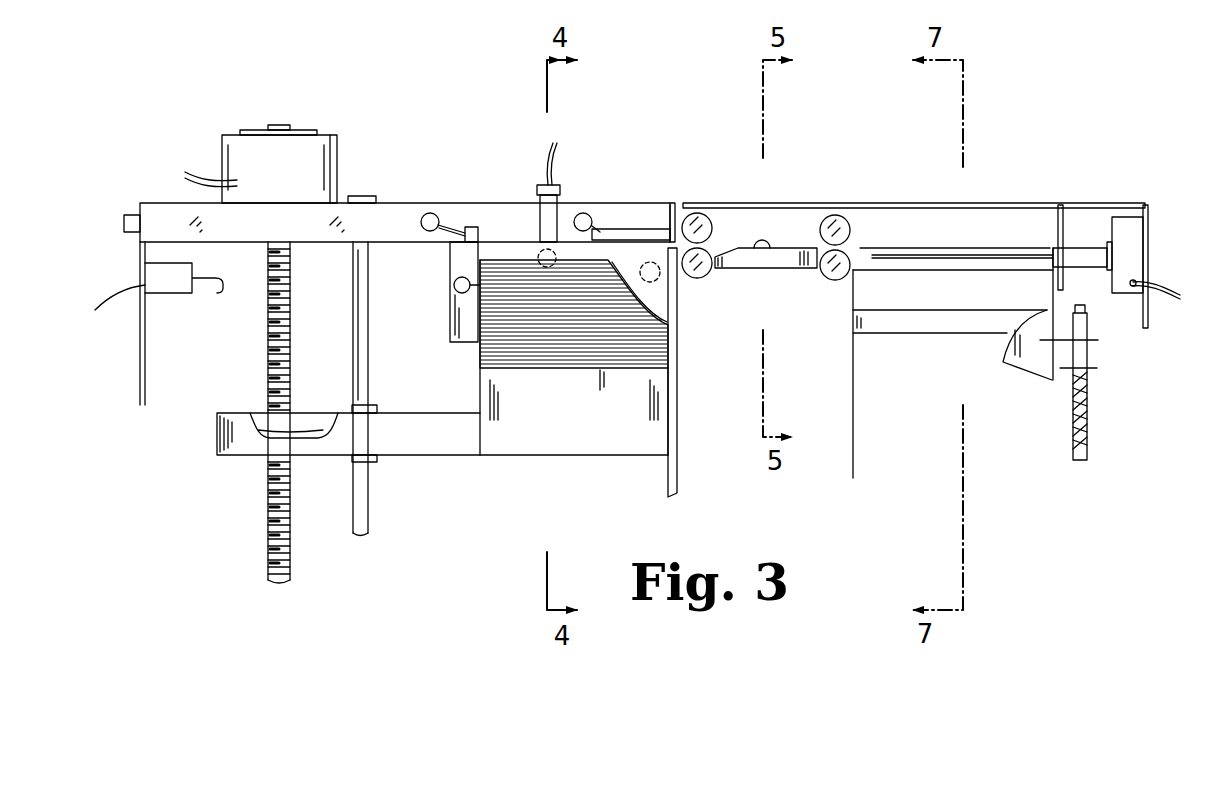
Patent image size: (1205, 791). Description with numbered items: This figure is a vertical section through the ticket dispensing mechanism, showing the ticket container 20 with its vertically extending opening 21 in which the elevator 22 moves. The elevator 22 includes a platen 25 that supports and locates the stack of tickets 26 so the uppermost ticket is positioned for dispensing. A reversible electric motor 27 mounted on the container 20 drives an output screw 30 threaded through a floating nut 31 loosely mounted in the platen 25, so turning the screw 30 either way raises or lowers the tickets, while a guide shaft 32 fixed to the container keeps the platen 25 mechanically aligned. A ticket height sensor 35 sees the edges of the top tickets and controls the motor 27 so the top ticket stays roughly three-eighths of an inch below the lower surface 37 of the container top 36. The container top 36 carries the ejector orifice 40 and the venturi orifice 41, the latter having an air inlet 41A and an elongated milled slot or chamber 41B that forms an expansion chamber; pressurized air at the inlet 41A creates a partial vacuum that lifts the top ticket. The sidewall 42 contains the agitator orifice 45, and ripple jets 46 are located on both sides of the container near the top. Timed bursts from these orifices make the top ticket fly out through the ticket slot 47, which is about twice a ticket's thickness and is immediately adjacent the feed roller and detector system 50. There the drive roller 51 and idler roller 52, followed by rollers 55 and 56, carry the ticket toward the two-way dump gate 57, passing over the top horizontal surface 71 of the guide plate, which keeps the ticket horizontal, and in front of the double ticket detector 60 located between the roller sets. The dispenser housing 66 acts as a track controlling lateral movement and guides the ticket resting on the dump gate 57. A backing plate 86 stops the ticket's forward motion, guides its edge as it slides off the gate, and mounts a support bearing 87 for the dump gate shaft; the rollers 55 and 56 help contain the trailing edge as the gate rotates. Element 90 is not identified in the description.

The ticket container 20 is at (678, 475).
The vertically extending opening 21 is at (658, 292).
The elevator 22 is at (545, 456).
The platen 25 is at (582, 441).
The stack of tickets 26 is at (545, 353).
The reversible electric motor 27 is at (327, 157).
The output screw 30 is at (268, 338).
The floating nut 31 is at (306, 428).
The guide shaft 32 is at (353, 338).
The ticket height sensor 35 is at (541, 252).
The container top 36 is at (638, 212).
The lower surface of the container top 37 is at (517, 246).
The ejector orifice 40 is at (477, 229).
The venturi orifice 41 is at (581, 213).
The air inlet 41A is at (603, 228).
The slot or chamber 41B is at (671, 230).
The sidewall 42 is at (455, 258).
The agitator orifice 45 is at (455, 288).
The ripple jets 46 is at (661, 276).
The ticket slot 47 is at (696, 212).
The feed roller and detector system 50 is at (858, 163).
The drive roller 51 is at (710, 272).
The idler roller 52 is at (712, 222).
The roller 55 is at (834, 280).
The roller 56 is at (849, 228).
The two-way dump gate 57 is at (982, 228).
The double ticket detector 60 is at (766, 243).
The dispenser housing 66 is at (1098, 217).
The top horizontal surface 71 is at (779, 269).
The backing plate 86 is at (1062, 222).
The support bearing 87 is at (1088, 262).
The box 90 is at (1136, 230).